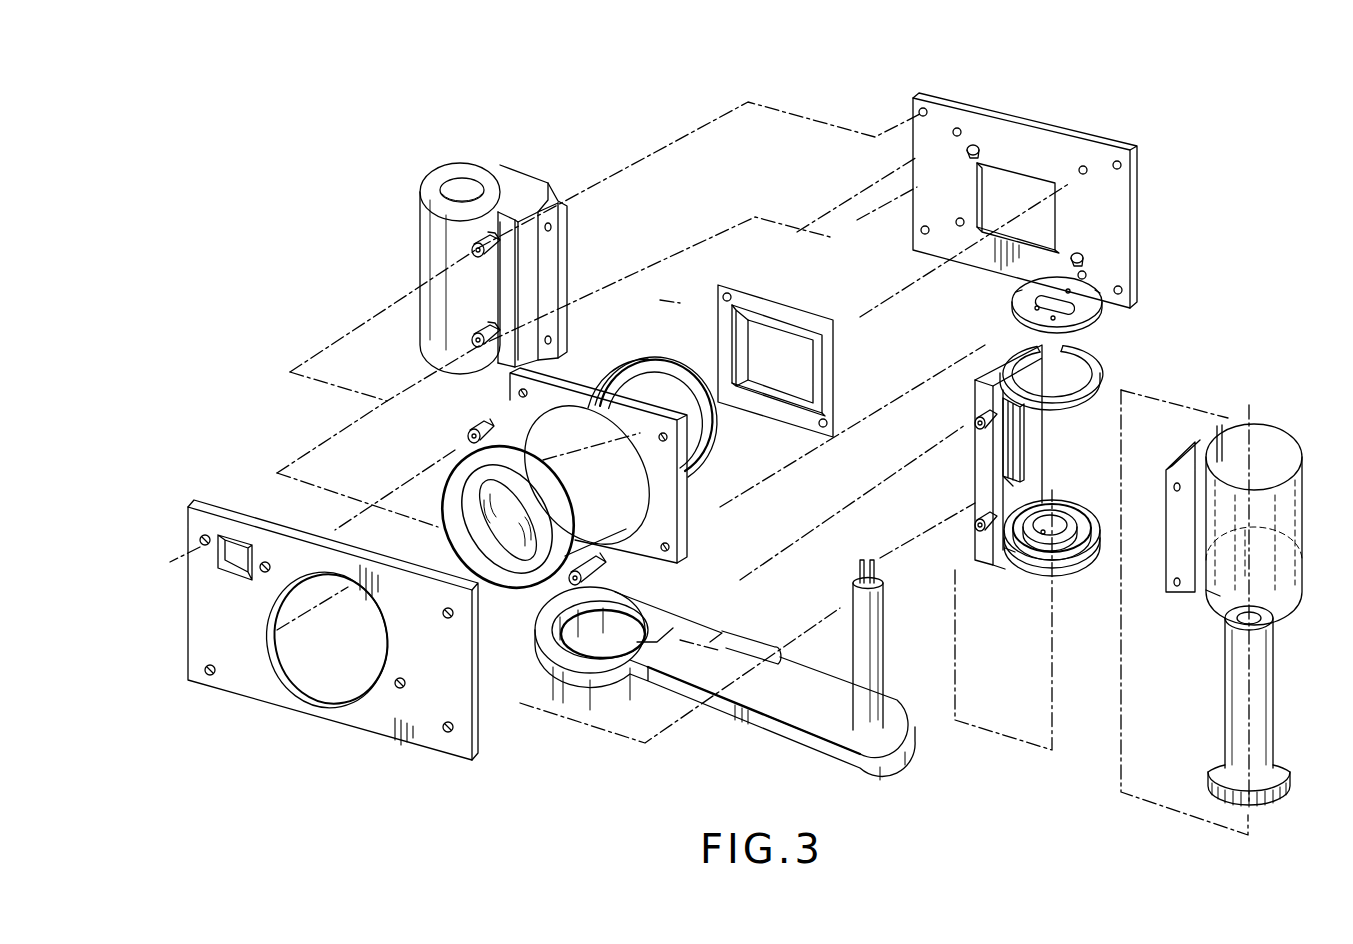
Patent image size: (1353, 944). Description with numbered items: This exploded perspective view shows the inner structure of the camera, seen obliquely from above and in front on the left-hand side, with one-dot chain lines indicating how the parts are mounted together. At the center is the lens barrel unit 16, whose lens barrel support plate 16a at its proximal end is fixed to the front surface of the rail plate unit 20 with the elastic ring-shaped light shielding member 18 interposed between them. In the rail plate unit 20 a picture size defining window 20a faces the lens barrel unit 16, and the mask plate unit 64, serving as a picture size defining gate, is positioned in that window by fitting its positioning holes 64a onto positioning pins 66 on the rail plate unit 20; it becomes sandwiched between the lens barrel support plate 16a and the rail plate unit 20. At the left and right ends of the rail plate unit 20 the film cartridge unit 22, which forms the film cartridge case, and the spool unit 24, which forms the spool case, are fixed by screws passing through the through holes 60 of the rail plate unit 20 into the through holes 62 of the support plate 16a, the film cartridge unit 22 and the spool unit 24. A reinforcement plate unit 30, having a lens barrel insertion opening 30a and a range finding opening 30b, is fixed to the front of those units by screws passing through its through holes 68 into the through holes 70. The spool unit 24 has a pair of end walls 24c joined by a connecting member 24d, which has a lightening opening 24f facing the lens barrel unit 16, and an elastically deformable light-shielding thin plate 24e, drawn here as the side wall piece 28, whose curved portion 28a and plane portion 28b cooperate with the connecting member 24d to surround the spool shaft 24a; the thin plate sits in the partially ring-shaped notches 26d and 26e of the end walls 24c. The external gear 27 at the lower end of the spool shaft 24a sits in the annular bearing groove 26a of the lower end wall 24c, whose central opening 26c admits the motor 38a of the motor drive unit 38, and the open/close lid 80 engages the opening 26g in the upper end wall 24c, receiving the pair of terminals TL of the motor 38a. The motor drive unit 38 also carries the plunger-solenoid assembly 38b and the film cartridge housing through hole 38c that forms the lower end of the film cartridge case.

The lens barrel unit 16 is at (614, 538).
The lens barrel support plate 16a is at (688, 503).
The ring-shaped light shielding member 18 is at (672, 372).
The rail plate unit 20 is at (1065, 143).
The picture size defining window 20a is at (1022, 172).
The film cartridge unit 22 is at (520, 187).
The spool unit 24 is at (970, 396).
The spool shaft 24a is at (1240, 702).
The end walls 24c is at (1100, 372).
The connecting member 24d is at (1035, 442).
The thin plate 24e is at (1207, 588).
The opening 24f is at (975, 412).
The annular bearing groove 26a is at (1078, 520).
The central opening 26c is at (1043, 535).
The partially ring-shaped notch 26d is at (1184, 389).
The partially ring-shaped notch 26e is at (1005, 555).
The opening 26g is at (930, 327).
The external gear 27 is at (1209, 774).
The sleeve 28 is at (1254, 524).
The curved portion 28a is at (1290, 595).
The plane portion 28b is at (1190, 448).
The reinforcement plate unit 30 is at (370, 712).
The lens barrel insertion opening 30a is at (305, 665).
The range finding opening 30b is at (240, 565).
The motor drive unit 38 is at (767, 690).
The motor 38a is at (886, 690).
The plunger-solenoid assembly 38b is at (745, 640).
The film cartridge housing through hole 38c is at (587, 643).
The through holes 60 is at (920, 109).
The through holes 62 is at (553, 228).
The mask plate unit 64 is at (830, 387).
The positioning holes 64a is at (732, 297).
The positioning pins 66 is at (976, 146).
The through holes 68 is at (262, 562).
The through holes 70 is at (471, 250).
The open/close lid 80 is at (1100, 311).
The terminals TL is at (862, 572).